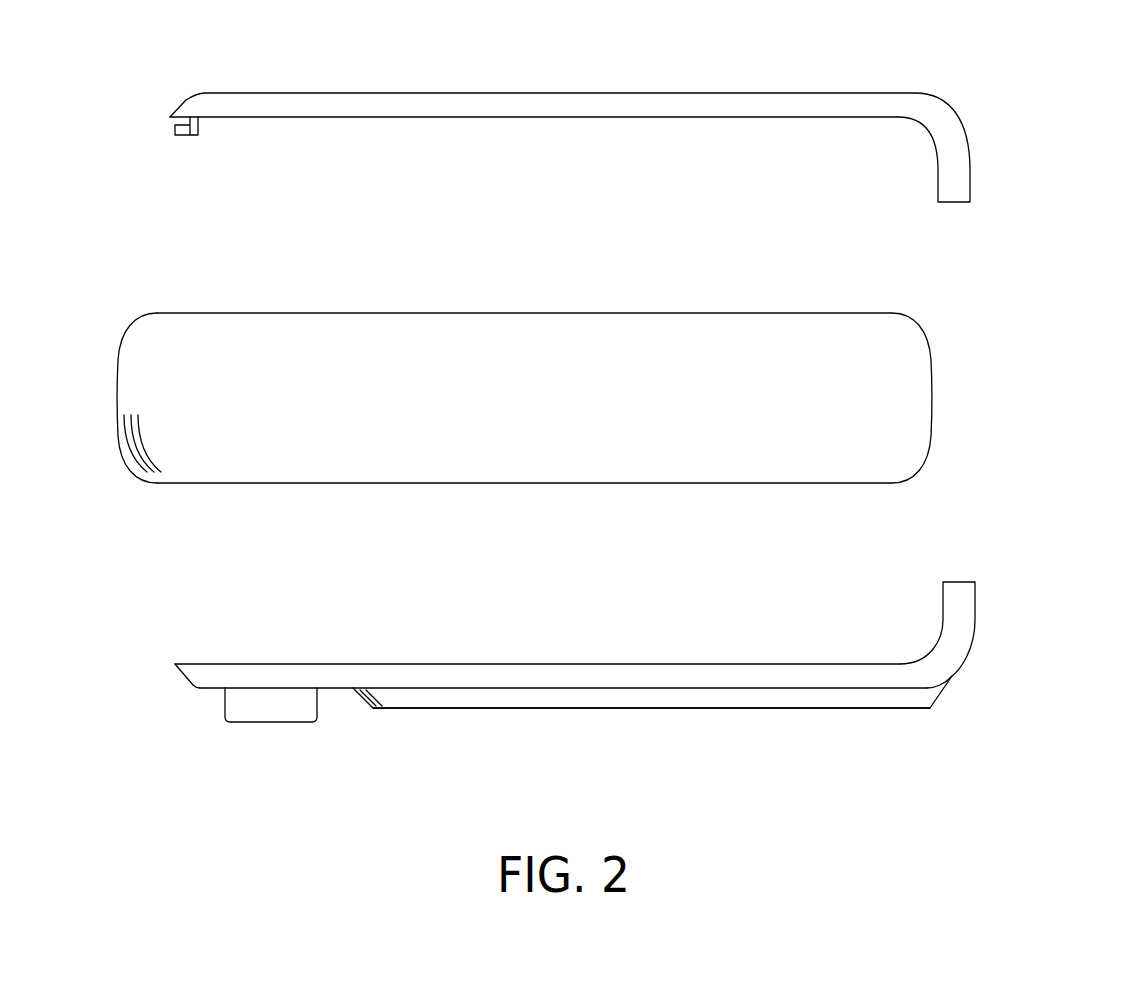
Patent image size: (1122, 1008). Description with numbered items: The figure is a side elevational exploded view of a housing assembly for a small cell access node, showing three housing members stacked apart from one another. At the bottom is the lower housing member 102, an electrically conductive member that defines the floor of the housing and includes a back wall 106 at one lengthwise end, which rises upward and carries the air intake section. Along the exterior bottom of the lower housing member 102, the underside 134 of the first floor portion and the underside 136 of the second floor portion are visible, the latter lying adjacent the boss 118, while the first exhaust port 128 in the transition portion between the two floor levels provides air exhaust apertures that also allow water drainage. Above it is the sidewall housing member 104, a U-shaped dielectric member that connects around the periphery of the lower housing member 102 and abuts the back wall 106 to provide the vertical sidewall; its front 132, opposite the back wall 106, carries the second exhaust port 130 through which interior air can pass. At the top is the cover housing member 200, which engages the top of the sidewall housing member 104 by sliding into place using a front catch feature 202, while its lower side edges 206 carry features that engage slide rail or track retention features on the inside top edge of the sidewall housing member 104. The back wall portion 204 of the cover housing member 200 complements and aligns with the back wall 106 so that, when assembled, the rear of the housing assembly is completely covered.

The lower housing member 102 is at (591, 668).
The sidewall housing member 104 is at (481, 364).
The back wall 106 is at (975, 590).
The boss 118 is at (240, 712).
The first exhaust port 128 is at (362, 705).
The second exhaust port 130 is at (130, 453).
The front 132 is at (125, 342).
The underside of the first floor portion 134 is at (538, 710).
The underside of the second floor portion 136 is at (195, 688).
The cover housing member 200 is at (580, 115).
The front catch feature 202 is at (188, 136).
The back wall portion 204 is at (963, 135).
The lower side edges 206 is at (530, 118).